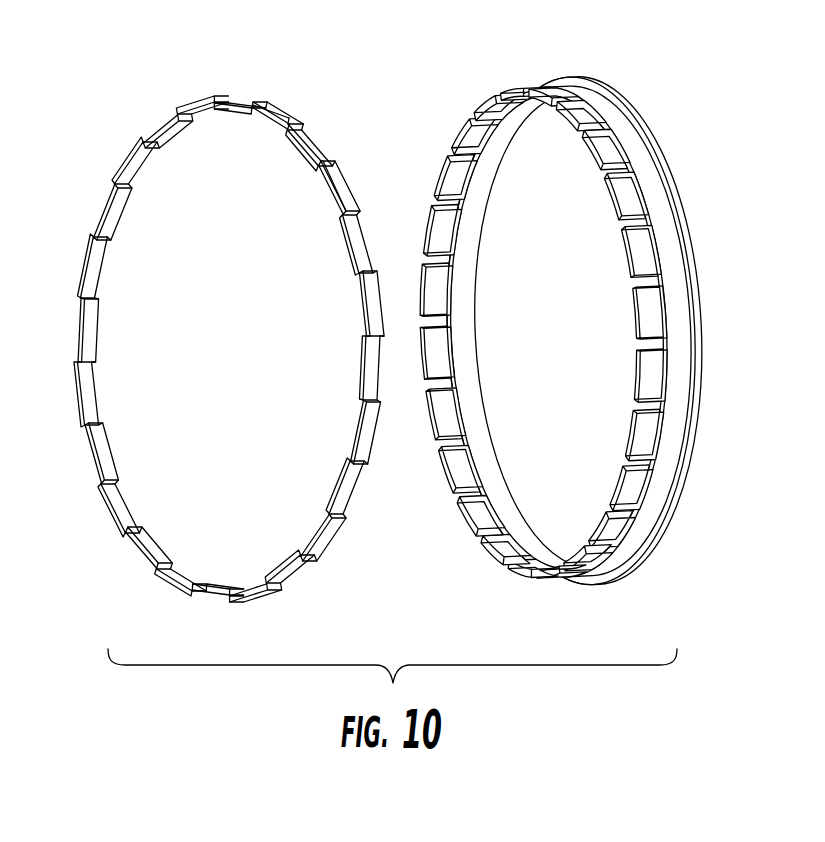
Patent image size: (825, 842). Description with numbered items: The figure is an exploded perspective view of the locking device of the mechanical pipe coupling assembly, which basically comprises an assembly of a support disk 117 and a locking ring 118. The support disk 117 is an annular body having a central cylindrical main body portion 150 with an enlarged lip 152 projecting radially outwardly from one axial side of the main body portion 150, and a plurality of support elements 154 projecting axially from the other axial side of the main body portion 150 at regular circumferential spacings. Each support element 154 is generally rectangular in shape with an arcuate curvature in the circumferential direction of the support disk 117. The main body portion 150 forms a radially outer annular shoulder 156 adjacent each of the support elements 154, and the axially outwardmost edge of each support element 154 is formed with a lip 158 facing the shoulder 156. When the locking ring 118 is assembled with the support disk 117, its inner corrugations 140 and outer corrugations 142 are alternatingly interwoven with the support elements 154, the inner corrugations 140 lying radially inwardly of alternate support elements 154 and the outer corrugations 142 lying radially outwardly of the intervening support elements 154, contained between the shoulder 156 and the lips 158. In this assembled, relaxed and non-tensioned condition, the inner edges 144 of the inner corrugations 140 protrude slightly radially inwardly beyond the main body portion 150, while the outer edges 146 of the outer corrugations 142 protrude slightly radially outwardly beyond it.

The support disk 117 is at (581, 331).
The locking ring 118 is at (238, 102).
The inner corrugations 140 is at (300, 162).
The outer corrugations 142 is at (279, 112).
The inner edges 144 is at (307, 170).
The outer edges 146 is at (300, 117).
The main body portion 150 is at (582, 331).
The lip 152 is at (584, 330).
The support elements 154 is at (644, 435).
The radially outer annular shoulder 156 is at (626, 196).
The lip 158 is at (650, 312).